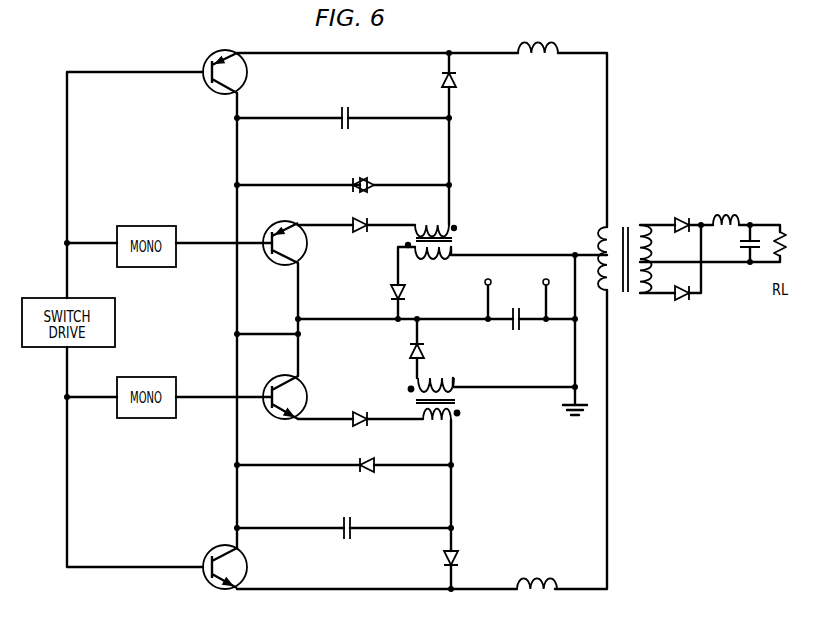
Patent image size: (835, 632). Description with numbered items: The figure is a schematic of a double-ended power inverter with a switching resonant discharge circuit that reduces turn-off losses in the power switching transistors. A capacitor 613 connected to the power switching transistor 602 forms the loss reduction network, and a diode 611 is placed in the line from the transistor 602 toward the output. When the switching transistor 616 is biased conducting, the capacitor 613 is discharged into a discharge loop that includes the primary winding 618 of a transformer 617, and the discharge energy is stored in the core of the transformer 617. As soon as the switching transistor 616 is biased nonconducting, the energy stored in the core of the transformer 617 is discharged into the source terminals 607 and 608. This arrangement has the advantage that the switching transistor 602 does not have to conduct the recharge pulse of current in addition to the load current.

The switching transistor 602 is at (239, 72).
The diode 611 is at (460, 83).
The capacitor 613 is at (344, 106).
The switching transistor 616 is at (297, 243).
The transformer 617 is at (444, 244).
The primary winding 618 is at (436, 216).
The source terminal 607 is at (488, 290).
The source terminal 608 is at (545, 290).